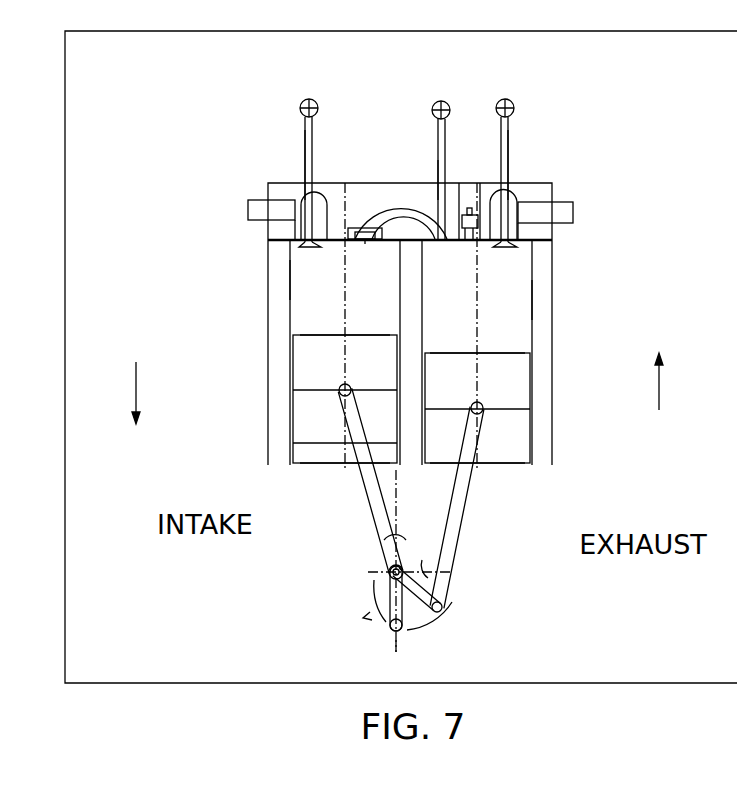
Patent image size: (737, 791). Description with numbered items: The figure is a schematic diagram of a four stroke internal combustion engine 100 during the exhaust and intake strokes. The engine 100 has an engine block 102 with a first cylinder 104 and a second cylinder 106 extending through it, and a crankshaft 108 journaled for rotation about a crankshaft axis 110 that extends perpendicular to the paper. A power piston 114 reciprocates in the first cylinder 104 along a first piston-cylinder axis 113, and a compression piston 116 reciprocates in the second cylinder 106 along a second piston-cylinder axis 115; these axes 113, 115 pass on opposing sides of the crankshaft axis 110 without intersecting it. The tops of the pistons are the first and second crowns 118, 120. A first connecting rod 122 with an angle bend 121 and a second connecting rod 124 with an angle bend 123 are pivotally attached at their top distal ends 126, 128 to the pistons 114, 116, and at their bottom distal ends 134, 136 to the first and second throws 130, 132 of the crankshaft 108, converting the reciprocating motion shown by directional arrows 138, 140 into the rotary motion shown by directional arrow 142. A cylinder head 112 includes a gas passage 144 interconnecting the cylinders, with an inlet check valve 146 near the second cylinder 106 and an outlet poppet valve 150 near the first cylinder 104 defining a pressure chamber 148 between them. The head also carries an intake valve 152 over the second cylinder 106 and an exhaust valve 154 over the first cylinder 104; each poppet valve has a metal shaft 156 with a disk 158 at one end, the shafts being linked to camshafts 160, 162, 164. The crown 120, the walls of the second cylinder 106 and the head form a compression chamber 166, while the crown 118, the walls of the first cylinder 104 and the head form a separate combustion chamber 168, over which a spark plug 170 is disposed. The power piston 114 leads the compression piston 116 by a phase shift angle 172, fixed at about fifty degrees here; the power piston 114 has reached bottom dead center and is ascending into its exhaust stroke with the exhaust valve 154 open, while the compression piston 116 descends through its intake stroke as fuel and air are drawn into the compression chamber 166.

The engine 100 is at (202, 560).
The engine block 102 is at (268, 274).
The first cylinder 104 is at (538, 258).
The second cylinder 106 is at (278, 313).
The crankshaft 108 is at (392, 567).
The crankshaft axis 110 is at (398, 576).
The cylinder head 112 is at (528, 183).
The first piston-cylinder axis 113 is at (485, 452).
The power piston 114 is at (516, 362).
The second piston-cylinder axis 115 is at (342, 452).
The compression piston 116 is at (307, 365).
The first crown 118 is at (490, 352).
The second crown 120 is at (322, 334).
The angle bend 121 is at (430, 556).
The first connecting rod 122 is at (458, 502).
The angle bend 123 is at (392, 536).
The second connecting rod 124 is at (372, 488).
The top distal end 126 is at (484, 409).
The top distal end 128 is at (340, 394).
The first throw 130 is at (388, 597).
The second throw 132 is at (447, 582).
The bottom distal end 134 is at (392, 630).
The bottom distal end 136 is at (446, 610).
The directional arrow 138 is at (660, 387).
The directional arrow 140 is at (133, 397).
The directional arrow 142 is at (400, 641).
The gas passage 144 is at (362, 225).
The inlet check valve 146 is at (365, 243).
The pressure chamber 148 is at (397, 208).
The outlet poppet valve 150 is at (438, 160).
The intake valve 152 is at (305, 130).
The exhaust valve 154 is at (508, 138).
The metal shaft 156 is at (306, 150).
The disk 158 is at (300, 247).
The camshaft 160 is at (317, 105).
The camshaft 162 is at (447, 102).
The camshaft 164 is at (512, 102).
The compression chamber 166 is at (310, 287).
The combustion chamber 168 is at (510, 300).
The spark plug 170 is at (470, 222).
The phase shift angle 172 is at (432, 633).